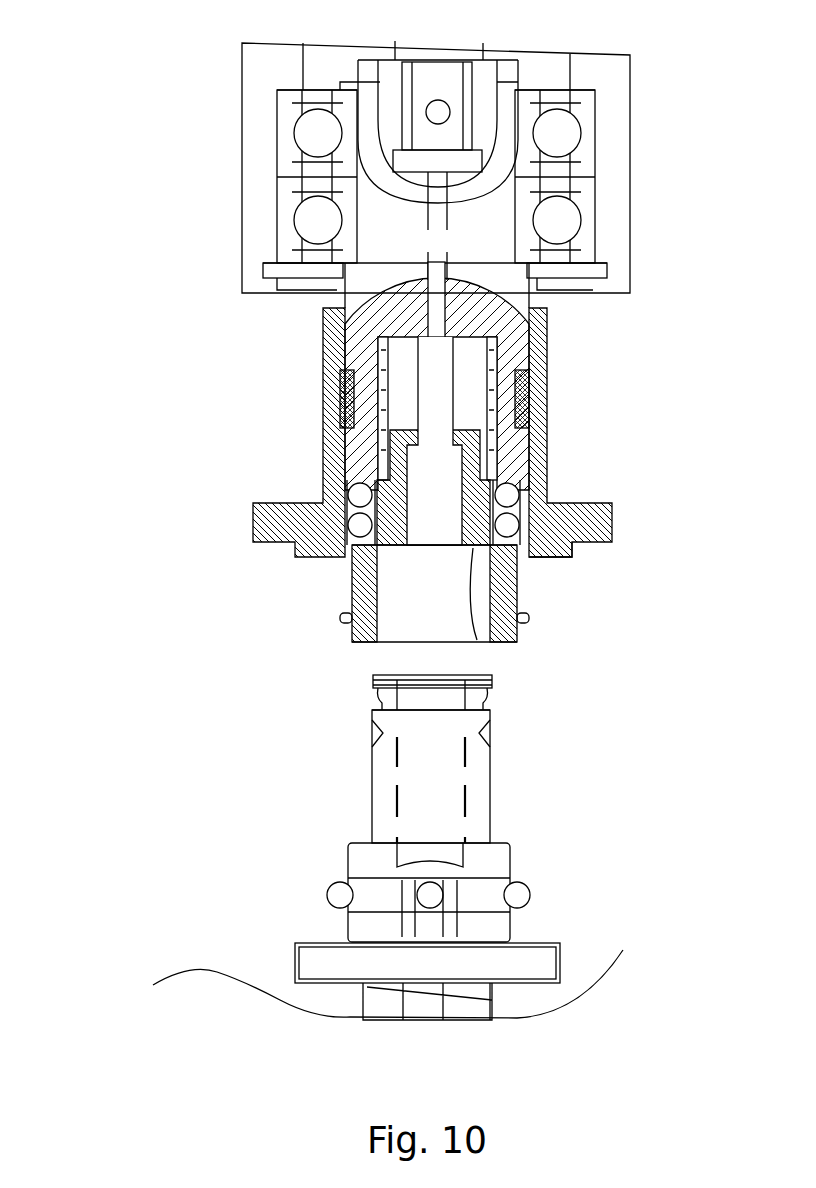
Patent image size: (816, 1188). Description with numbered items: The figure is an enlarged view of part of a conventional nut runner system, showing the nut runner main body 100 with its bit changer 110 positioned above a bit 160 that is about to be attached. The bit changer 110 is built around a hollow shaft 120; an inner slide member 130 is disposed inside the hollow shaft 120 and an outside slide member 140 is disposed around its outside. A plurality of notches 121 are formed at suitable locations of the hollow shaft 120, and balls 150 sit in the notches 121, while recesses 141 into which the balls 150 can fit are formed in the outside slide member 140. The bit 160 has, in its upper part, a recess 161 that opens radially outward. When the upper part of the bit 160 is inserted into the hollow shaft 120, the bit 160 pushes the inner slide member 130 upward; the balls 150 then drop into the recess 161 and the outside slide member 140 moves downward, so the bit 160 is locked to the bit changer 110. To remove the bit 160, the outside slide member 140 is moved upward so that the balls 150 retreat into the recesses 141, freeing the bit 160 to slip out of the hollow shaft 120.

The nut runner main body 100 is at (213, 160).
The bit changer 110 is at (393, 484).
The hollow shaft 120 is at (380, 323).
The notches 121 is at (477, 640).
The inner slide member 130 is at (353, 573).
The outside slide member 140 is at (545, 488).
The recesses 141 is at (553, 557).
The balls 150 is at (350, 492).
The bit 160 is at (358, 847).
The recess 161 is at (492, 730).